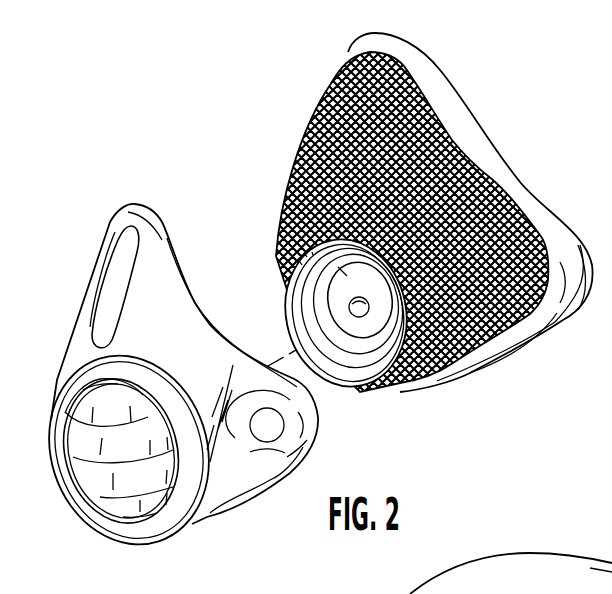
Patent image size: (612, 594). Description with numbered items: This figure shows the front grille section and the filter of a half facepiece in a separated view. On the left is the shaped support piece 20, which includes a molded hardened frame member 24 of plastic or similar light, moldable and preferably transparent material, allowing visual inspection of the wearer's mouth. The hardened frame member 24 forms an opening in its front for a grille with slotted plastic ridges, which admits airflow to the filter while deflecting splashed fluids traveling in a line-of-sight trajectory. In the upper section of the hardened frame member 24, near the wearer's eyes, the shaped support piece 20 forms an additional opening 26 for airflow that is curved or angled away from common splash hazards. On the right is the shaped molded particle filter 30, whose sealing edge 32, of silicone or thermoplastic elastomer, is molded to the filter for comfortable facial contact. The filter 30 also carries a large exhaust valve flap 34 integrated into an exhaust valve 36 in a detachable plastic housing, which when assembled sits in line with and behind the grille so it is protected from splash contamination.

The shaped support piece 20 is at (37, 428).
The hardened frame member 24 is at (223, 467).
The opening 26 is at (108, 297).
The filter 30 is at (332, 123).
The sealing edge 32 is at (463, 137).
The exhaust valve flap 34 is at (283, 240).
The exhaust valve 36 is at (363, 375).